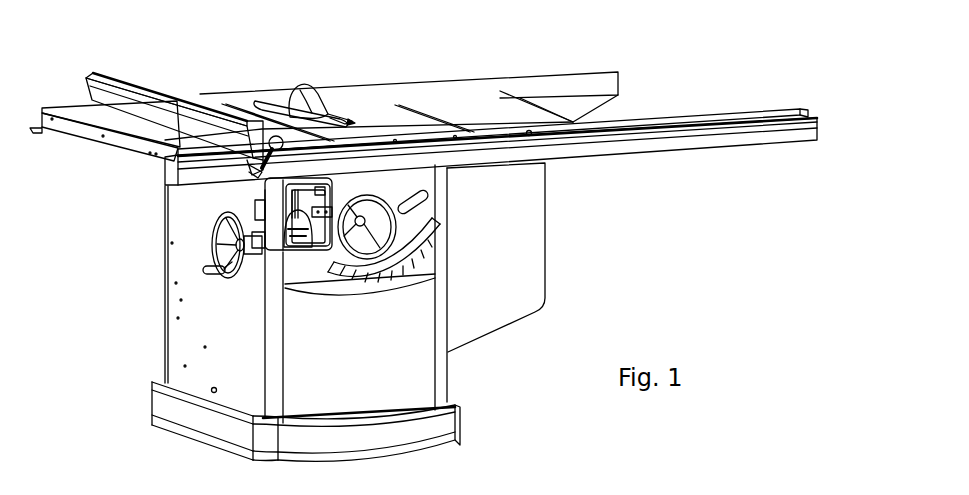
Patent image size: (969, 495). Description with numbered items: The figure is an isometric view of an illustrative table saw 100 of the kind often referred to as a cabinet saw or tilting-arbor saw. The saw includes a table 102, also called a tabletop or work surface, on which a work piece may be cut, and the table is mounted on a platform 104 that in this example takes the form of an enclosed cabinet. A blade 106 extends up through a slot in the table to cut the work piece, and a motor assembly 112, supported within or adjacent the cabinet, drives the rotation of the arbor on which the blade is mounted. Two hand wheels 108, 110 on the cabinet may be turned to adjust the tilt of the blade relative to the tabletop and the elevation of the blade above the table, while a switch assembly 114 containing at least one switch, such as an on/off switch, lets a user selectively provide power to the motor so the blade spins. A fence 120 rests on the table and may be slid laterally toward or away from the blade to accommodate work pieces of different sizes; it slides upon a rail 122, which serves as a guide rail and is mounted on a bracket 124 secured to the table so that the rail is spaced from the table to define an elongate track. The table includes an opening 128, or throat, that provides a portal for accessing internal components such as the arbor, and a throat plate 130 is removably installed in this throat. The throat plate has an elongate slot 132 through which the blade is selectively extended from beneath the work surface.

The table saw 100 is at (423, 242).
The table 102 is at (350, 97).
The platform 104 is at (190, 313).
The blade 106 is at (302, 90).
The hand wheel 108 is at (212, 238).
The hand wheel 110 is at (400, 229).
The motor assembly 112 is at (548, 284).
The switch assembly 114 is at (303, 254).
The fence 120 is at (90, 80).
The rail 122 is at (683, 140).
The bracket 124 is at (697, 118).
The opening 128 is at (334, 112).
The throat plate 130 is at (373, 121).
The elongate slot 132 is at (288, 87).